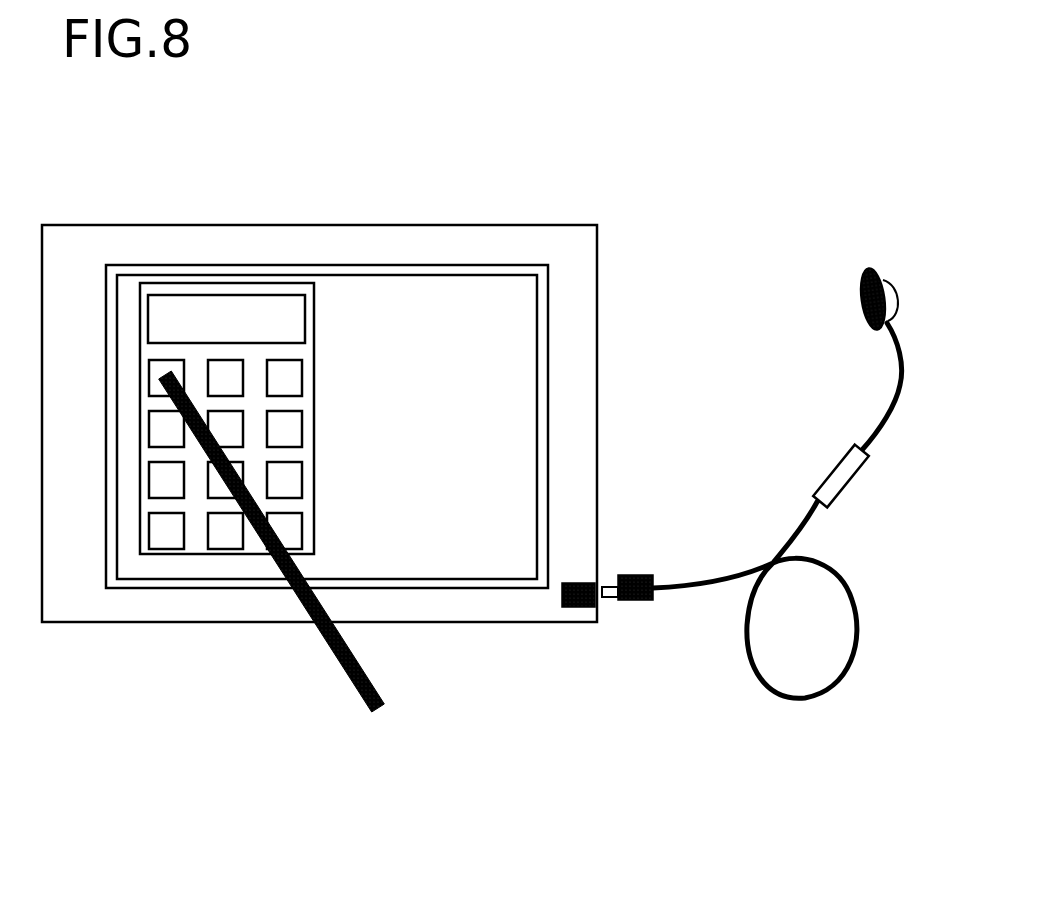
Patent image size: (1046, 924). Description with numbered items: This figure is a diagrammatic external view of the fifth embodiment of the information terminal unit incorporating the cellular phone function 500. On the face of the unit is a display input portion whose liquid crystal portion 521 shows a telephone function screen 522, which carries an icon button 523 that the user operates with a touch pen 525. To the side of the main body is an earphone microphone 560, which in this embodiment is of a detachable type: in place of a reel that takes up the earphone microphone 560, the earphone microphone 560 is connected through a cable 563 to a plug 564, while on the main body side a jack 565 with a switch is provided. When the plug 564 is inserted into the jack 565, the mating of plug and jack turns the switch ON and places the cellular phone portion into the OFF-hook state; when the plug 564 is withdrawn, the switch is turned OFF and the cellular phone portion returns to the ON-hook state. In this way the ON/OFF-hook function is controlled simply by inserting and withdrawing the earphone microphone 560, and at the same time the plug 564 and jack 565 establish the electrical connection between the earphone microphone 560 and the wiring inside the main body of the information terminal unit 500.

The information terminal unit incorporating the cellular phone function 500 is at (108, 223).
The liquid crystal portion 521 is at (524, 265).
The telephone function screen 522 is at (228, 284).
The icon button 523 is at (220, 549).
The touch pen 525 is at (340, 667).
The earphone microphone 560 is at (868, 268).
The cable 563 is at (787, 700).
The plug 564 is at (653, 575).
The jack 565 is at (577, 607).